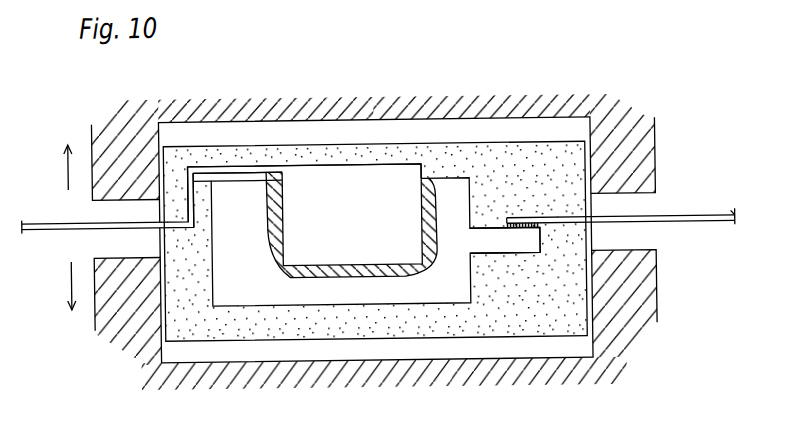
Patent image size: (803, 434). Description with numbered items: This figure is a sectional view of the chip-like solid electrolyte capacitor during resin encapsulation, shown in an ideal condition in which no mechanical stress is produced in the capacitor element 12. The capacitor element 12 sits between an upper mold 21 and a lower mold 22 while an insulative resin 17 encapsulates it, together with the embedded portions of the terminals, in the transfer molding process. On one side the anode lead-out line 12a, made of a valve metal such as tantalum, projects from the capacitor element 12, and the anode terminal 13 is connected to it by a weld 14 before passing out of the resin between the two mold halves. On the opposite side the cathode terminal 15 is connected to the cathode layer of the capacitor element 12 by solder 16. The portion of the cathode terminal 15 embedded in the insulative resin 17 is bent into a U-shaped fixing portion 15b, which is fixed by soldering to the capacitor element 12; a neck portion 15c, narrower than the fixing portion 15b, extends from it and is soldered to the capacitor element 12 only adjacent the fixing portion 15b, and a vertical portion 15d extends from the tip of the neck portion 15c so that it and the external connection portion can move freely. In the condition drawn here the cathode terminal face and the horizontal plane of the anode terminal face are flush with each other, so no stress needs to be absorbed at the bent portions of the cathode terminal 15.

The capacitor element 12 is at (367, 305).
The anode lead-out line 12a is at (500, 247).
The anode terminal 13 is at (688, 219).
The weld 14 is at (524, 222).
The cathode terminal 15 is at (218, 166).
The U-shaped fixing portion 15b is at (378, 183).
The neck portion 15c is at (251, 168).
The vertical portion 15d is at (192, 198).
The solder 16 is at (348, 277).
The insulative resin 17 is at (527, 327).
The upper mold 21 is at (636, 148).
The lower mold 22 is at (642, 296).